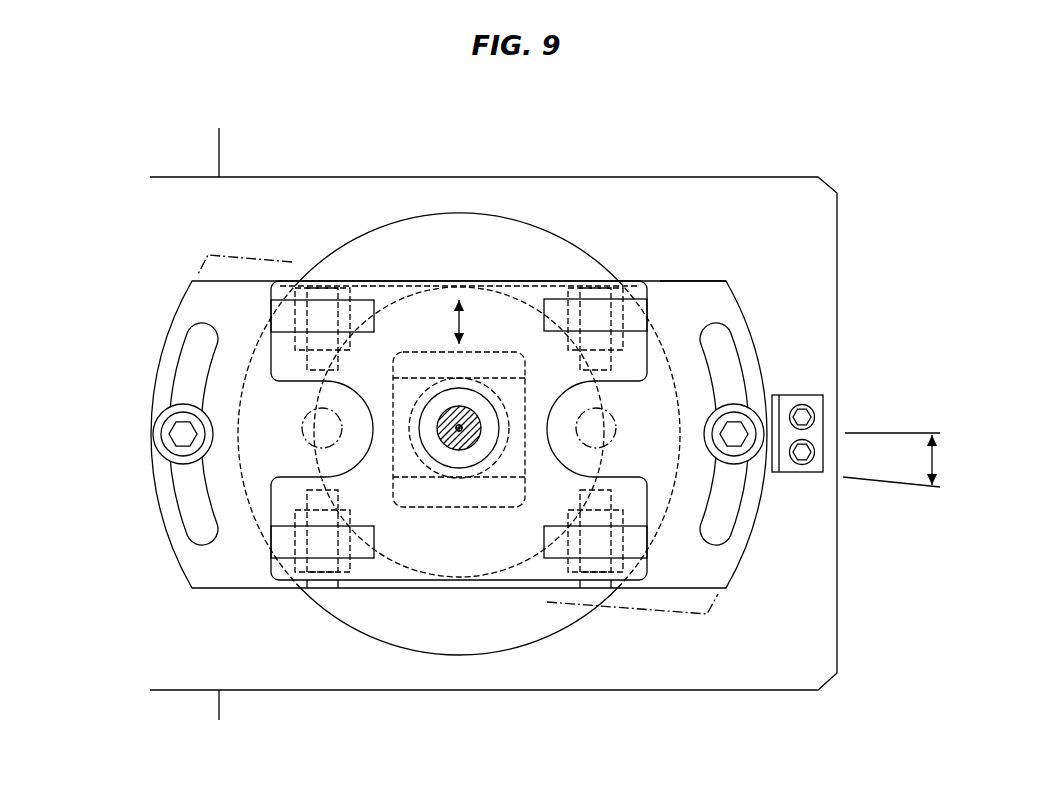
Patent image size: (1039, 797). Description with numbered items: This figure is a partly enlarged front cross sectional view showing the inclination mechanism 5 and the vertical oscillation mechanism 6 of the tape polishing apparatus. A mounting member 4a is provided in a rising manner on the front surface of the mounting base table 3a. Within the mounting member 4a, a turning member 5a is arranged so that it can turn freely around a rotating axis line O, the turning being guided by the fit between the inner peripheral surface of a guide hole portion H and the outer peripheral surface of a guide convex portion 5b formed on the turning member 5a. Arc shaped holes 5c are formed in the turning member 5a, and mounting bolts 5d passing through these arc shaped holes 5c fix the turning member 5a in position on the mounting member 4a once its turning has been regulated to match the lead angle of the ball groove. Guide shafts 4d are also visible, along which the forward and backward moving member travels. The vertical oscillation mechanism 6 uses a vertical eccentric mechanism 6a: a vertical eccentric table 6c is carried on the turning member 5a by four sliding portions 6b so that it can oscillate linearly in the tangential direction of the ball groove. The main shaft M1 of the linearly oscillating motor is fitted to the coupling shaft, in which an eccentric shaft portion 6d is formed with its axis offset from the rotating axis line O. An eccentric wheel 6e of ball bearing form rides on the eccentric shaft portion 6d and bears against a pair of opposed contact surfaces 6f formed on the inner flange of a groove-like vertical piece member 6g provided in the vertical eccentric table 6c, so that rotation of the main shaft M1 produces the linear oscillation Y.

The mounting base table 3a is at (205, 162).
The mounting member 4a is at (745, 205).
The guide shafts 4d is at (614, 440).
The inclination mechanism 5 is at (778, 320).
The turning member 5a is at (692, 298).
The guide convex portion 5b is at (677, 488).
The arc shaped holes 5c is at (743, 367).
The mounting bolts 5d is at (733, 425).
The vertical oscillation mechanism 6 is at (417, 162).
The vertical eccentric mechanism 6a is at (448, 163).
The sliding portions 6b is at (357, 316).
The vertical eccentric table 6c is at (458, 553).
The eccentric shaft portion 6d is at (467, 408).
The eccentric wheel 6e is at (468, 457).
The contact surfaces 6f is at (413, 480).
The vertical piece member 6g is at (492, 507).
The rotating axis line O is at (459, 438).
The main shaft M1 is at (445, 410).
The linear oscillation Y is at (488, 234).
The guide hole portion H is at (562, 600).